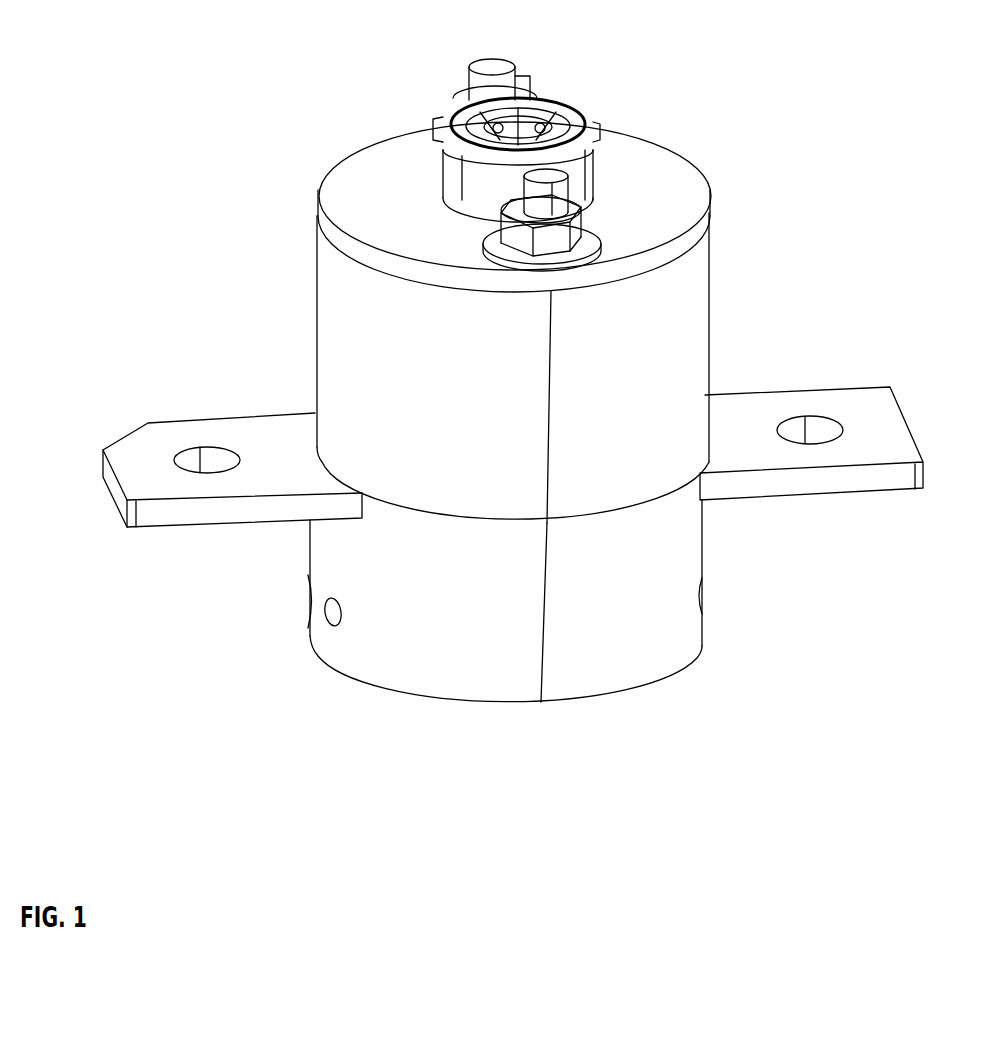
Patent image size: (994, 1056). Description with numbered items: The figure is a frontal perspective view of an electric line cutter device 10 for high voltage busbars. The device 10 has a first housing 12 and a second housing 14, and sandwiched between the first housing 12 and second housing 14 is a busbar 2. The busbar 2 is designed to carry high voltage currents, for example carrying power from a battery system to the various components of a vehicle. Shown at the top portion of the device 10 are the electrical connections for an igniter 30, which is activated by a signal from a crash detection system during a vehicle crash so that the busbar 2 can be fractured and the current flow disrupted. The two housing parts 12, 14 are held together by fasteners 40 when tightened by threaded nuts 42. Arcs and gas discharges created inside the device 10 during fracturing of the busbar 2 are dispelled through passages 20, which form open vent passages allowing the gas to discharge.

The electric line cutter device 10 is at (120, 79).
The first housing 12 is at (357, 317).
The second housing 14 is at (432, 640).
The passages 20 is at (307, 605).
The busbar 2 is at (873, 398).
The igniter 30 is at (462, 103).
The fasteners 40 is at (557, 188).
The threaded nuts 42 is at (565, 230).